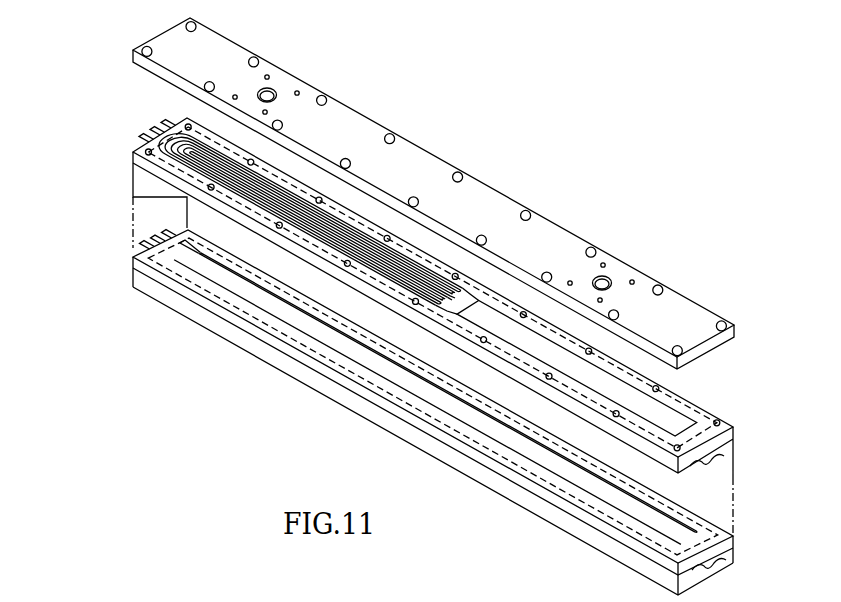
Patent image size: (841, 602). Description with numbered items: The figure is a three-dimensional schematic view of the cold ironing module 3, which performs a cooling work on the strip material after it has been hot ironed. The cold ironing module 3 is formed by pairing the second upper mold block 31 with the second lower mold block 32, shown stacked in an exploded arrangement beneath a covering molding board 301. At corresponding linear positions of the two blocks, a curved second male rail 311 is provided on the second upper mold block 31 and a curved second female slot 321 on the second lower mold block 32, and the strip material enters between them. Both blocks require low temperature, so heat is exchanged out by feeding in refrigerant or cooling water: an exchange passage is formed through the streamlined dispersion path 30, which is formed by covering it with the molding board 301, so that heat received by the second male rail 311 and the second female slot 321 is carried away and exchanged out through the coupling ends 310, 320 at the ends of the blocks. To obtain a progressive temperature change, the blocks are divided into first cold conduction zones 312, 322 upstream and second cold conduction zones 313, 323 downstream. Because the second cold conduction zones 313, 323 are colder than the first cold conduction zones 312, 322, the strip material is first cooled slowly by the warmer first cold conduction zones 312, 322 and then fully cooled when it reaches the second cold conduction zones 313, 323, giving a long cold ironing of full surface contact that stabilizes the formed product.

The cold ironing module 3 is at (450, 138).
The dispersion path 30 is at (700, 418).
The molding board 301 is at (552, 233).
The second upper mold block 31 is at (688, 396).
The coupling end 310 is at (140, 125).
The second male rail 311 is at (720, 453).
The first cold conduction zone 312 is at (513, 362).
The second cold conduction zone 313 is at (262, 214).
The second lower mold block 32 is at (690, 512).
The coupling end 320 is at (132, 240).
The second female slot 321 is at (700, 540).
The first cold conduction zone 322 is at (597, 505).
The second cold conduction zone 323 is at (300, 343).